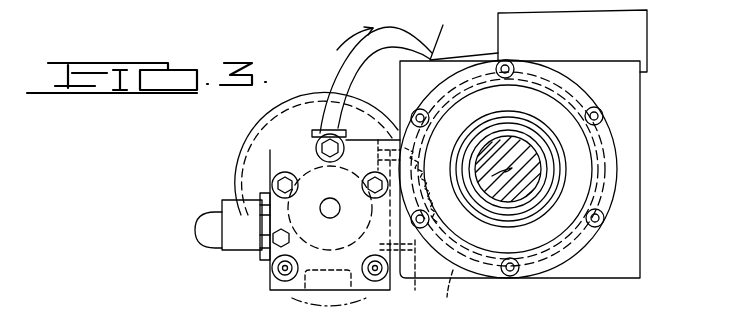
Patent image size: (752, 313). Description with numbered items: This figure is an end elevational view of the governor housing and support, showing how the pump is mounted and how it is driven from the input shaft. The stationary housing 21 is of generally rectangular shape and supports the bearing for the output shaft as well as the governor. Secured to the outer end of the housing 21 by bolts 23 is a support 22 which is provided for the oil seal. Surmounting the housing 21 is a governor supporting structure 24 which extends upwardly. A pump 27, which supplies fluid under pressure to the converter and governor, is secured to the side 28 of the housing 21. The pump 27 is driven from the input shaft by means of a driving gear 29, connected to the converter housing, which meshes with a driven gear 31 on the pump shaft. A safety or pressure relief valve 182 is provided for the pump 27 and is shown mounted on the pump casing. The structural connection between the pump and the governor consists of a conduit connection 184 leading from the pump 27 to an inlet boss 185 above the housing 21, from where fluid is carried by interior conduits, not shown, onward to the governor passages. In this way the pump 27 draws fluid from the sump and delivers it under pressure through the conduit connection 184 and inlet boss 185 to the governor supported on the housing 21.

The stationary housing 21 is at (627, 137).
The support 22 is at (522, 102).
The bolts 23 is at (594, 107).
The governor supporting structure 24 is at (640, 42).
The pump 27 is at (300, 152).
The side of housing 28 is at (400, 96).
The driving gear 29 is at (458, 288).
The driven gear 31 is at (387, 305).
The pressure relief valve 182 is at (232, 212).
The conduit connection 184 is at (390, 37).
The inlet boss 185 is at (443, 34).